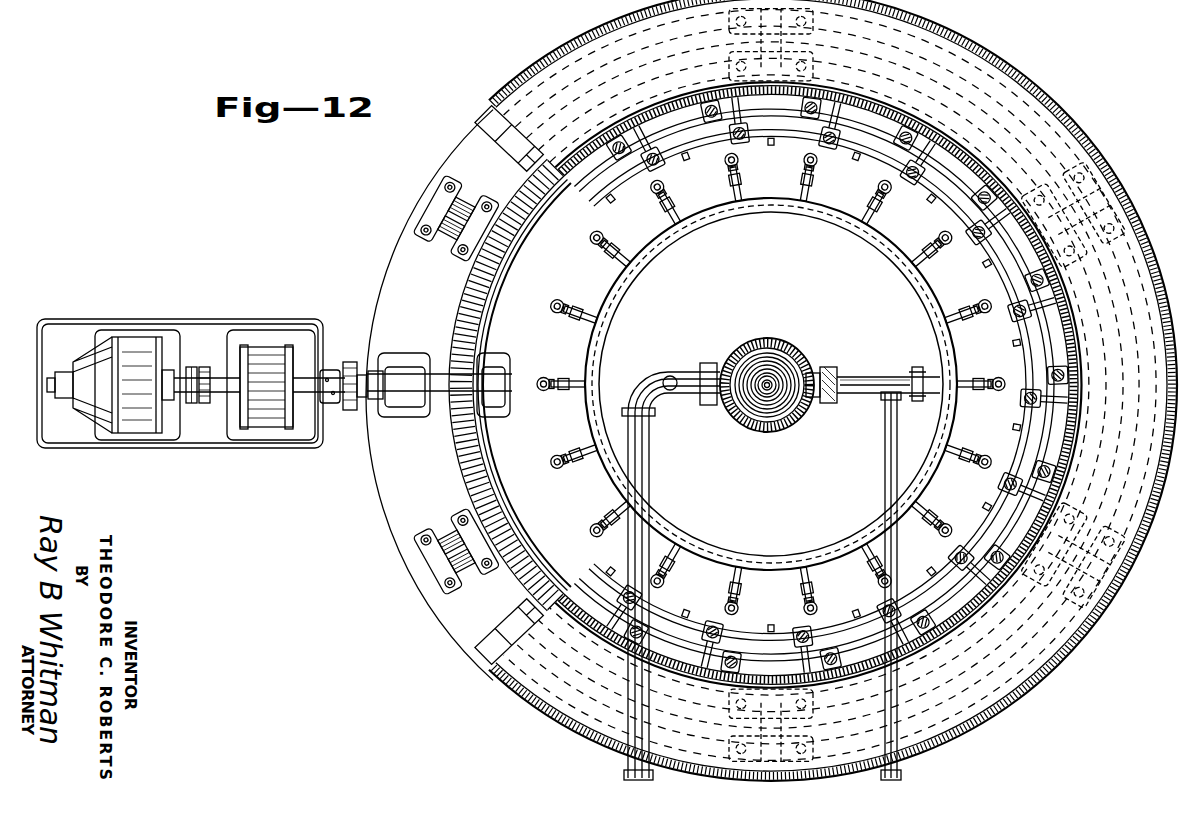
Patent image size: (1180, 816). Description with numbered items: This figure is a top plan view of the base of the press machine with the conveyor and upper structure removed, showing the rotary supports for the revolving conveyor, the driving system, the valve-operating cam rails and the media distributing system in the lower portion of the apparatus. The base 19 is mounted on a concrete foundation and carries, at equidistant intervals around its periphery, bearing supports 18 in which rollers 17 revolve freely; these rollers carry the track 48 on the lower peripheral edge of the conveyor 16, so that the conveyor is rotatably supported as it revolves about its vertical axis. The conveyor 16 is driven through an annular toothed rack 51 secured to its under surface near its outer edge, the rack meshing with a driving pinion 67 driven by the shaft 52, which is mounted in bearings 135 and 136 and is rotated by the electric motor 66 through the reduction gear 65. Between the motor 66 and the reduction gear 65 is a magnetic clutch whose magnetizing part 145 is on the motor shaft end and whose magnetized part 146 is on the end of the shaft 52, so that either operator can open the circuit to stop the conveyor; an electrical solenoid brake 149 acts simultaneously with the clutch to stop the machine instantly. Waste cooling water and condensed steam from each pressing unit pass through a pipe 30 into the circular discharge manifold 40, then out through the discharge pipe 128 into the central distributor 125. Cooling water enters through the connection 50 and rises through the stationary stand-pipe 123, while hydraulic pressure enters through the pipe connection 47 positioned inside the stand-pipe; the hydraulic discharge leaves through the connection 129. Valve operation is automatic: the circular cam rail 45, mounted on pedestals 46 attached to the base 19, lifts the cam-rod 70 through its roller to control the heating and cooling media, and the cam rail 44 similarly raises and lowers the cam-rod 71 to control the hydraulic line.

The conveyor 16 is at (575, 48).
The rollers 17 is at (465, 186).
The bearing supports 18 is at (478, 166).
The base 19 is at (750, 395).
The pipe 30 is at (670, 200).
The discharge manifold 40 is at (838, 218).
The cam rail 44 is at (576, 186).
The cam rail 45 is at (614, 190).
The pedestals 46 is at (805, 130).
The pipe connection 47 is at (778, 398).
The track 48 is at (498, 127).
The connection 50 is at (652, 478).
The annular toothed rack 51 is at (503, 270).
The shaft 52 is at (352, 410).
The reduction gear 65 is at (268, 348).
The electric motor 66 is at (145, 340).
The driving pinion 67 is at (445, 410).
The cam-rod 70 is at (745, 135).
The cam-rod 71 is at (705, 117).
The stand-pipe 123 is at (760, 400).
The central distributor 125 is at (790, 345).
The discharge pipe 128 is at (868, 376).
The connection 129 is at (703, 372).
The bearing 135 is at (400, 360).
The bearing 136 is at (497, 360).
The magnetizing part of magnetic clutch 145 is at (192, 367).
The magnetized part of magnetic clutch 146 is at (205, 403).
The electrical solenoid brake 149 is at (330, 368).